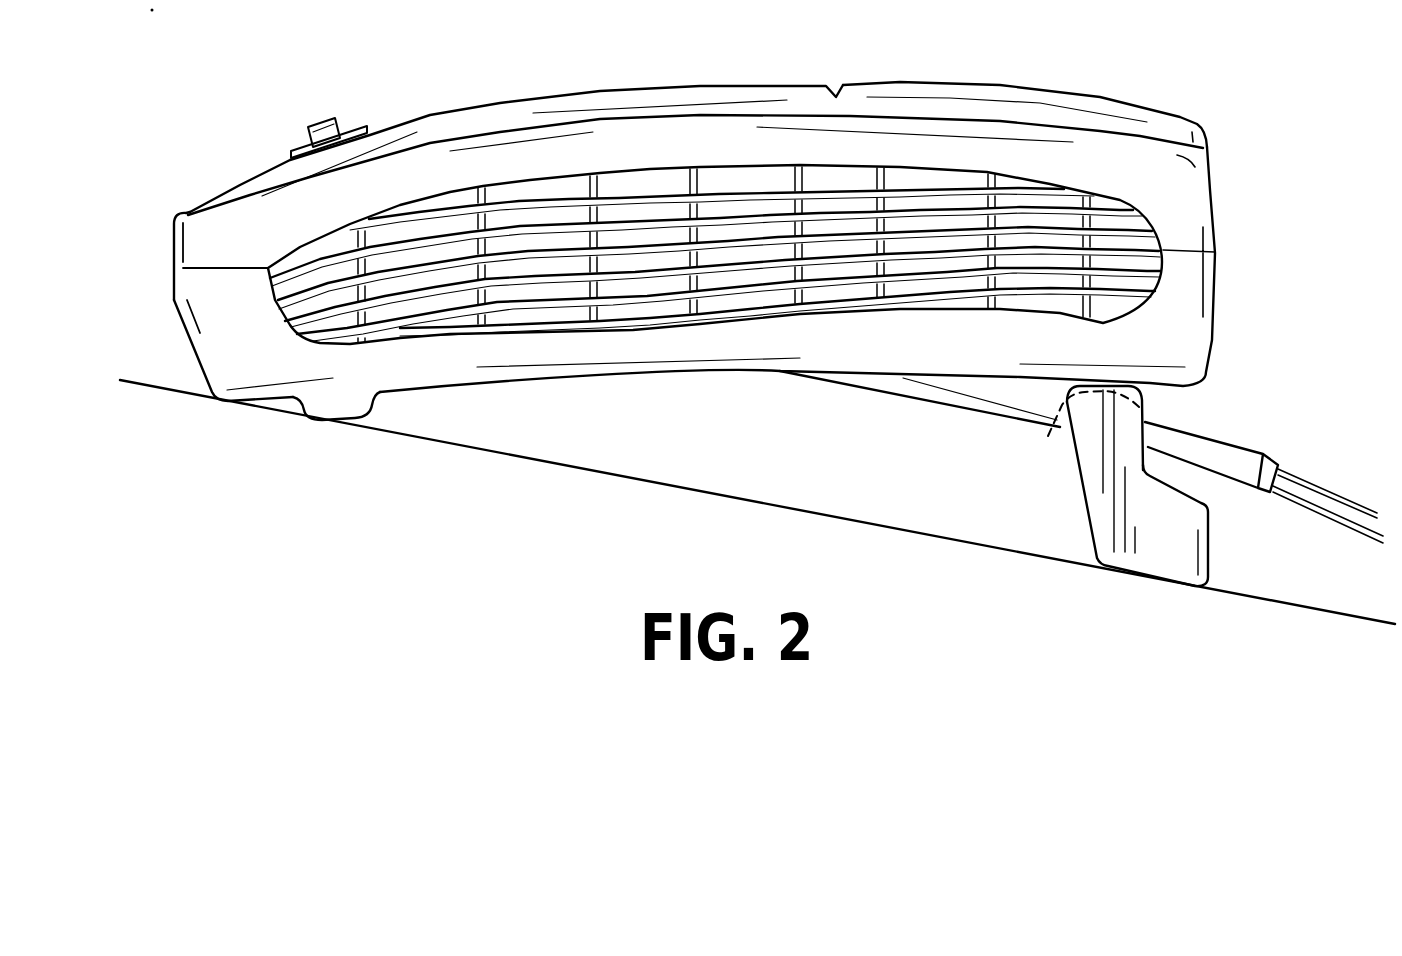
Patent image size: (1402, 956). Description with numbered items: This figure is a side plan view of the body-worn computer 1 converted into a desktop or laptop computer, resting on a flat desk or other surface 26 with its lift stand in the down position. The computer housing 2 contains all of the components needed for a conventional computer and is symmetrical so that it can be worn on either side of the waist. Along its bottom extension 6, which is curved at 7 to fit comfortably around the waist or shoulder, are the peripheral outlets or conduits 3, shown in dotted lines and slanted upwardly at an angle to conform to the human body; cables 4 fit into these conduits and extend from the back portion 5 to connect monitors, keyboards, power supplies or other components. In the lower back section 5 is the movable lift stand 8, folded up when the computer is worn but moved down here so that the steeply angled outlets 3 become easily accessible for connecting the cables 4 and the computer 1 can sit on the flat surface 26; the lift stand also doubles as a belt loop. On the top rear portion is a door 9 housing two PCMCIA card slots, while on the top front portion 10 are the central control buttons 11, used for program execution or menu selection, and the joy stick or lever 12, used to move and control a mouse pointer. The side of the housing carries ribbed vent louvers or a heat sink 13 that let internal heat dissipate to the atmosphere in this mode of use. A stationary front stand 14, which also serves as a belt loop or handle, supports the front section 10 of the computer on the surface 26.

The computer 1 is at (651, 50).
The computer housing 2 is at (773, 85).
The outlets 3 is at (1048, 436).
The cables 4 is at (1221, 433).
The back portion 5 is at (1213, 197).
The bottom extension 6 is at (1142, 388).
The curved portion 7 is at (932, 398).
The lift stand 8 is at (1100, 498).
The door 9 is at (975, 83).
The top front portion 10 is at (176, 222).
The control buttons 11 is at (343, 128).
The lever 12 is at (316, 122).
The vent louvers 13 is at (657, 268).
The stationary stand 14 is at (340, 408).
The flat surface 26 is at (1067, 563).